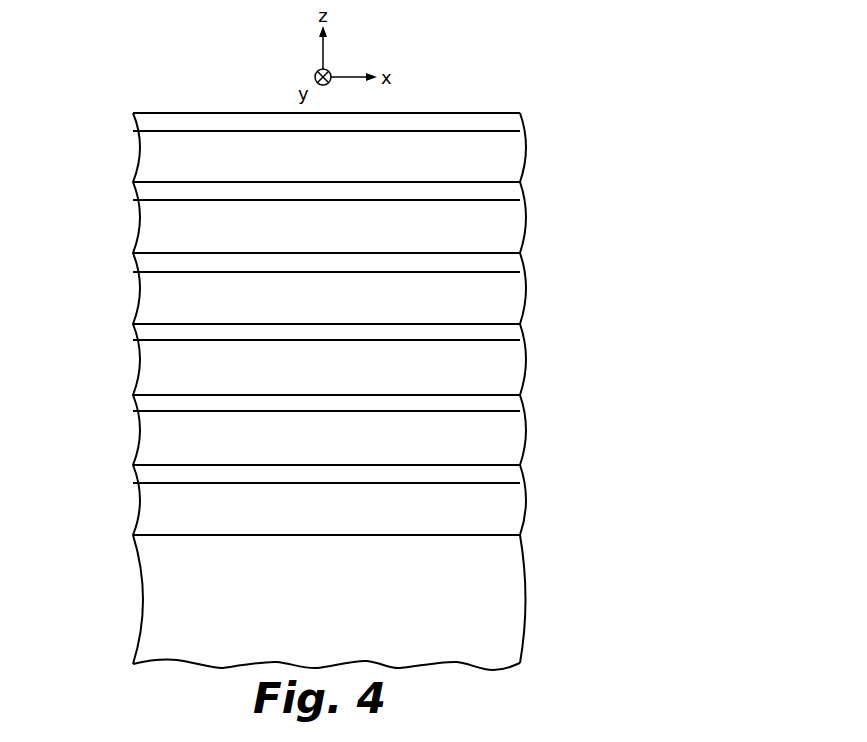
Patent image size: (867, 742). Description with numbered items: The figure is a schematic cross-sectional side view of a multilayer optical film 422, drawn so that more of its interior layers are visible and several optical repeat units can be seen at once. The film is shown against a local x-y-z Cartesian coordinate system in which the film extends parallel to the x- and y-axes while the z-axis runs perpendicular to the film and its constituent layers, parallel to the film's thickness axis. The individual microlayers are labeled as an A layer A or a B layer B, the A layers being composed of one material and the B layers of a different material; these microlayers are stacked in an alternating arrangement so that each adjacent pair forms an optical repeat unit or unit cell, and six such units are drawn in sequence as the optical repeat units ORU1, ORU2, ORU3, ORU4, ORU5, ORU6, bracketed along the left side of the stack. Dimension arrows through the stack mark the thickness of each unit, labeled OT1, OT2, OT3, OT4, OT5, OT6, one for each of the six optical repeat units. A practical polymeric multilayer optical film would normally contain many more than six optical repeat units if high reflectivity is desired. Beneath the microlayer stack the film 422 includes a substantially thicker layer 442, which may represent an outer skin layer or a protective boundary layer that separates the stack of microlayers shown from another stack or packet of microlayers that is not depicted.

The multilayer film 422 is at (470, 58).
The substantially thicker layer 442 is at (512, 604).
The A layer A is at (516, 476).
The B layer B is at (516, 511).
The optical repeat unit ORU1 is at (127, 114).
The optical repeat unit ORU2 is at (127, 183).
The optical repeat unit ORU3 is at (127, 254).
The optical repeat unit ORU4 is at (127, 325).
The optical repeat unit ORU5 is at (127, 396).
The optical repeat unit ORU6 is at (127, 466).
The optical thickness of ORU1 OT1 is at (372, 124).
The optical thickness of ORU2 OT2 is at (381, 193).
The optical thickness of ORU3 OT3 is at (392, 264).
The optical thickness of ORU4 OT4 is at (372, 335).
The optical thickness of ORU5 OT5 is at (362, 406).
The optical thickness of ORU6 OT6 is at (353, 476).